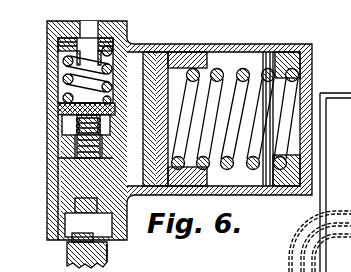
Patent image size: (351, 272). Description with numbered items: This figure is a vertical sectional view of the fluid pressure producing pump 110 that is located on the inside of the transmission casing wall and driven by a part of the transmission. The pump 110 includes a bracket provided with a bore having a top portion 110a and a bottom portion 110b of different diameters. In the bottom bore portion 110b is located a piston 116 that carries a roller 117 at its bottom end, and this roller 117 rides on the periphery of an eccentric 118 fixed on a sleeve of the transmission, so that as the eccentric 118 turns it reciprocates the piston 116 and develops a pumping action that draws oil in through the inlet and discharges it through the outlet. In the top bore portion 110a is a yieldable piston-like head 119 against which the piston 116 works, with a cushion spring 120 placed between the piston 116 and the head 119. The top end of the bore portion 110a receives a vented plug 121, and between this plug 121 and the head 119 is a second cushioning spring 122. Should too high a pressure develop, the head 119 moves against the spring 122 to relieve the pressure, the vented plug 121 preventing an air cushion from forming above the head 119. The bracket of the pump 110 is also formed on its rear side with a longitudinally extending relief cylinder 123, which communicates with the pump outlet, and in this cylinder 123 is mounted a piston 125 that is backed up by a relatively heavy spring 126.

The pump 110 is at (144, 47).
The top bore portion 110a is at (58, 63).
The bottom bore portion 110b is at (65, 228).
The piston 116 is at (80, 184).
The roller 117 is at (77, 238).
The eccentric 118 is at (110, 253).
The piston-like head 119 is at (62, 108).
The cushion spring 120 is at (77, 125).
The vented plug 121 is at (47, 30).
The second cushioning spring 122 is at (62, 80).
The relief cylinder 123 is at (249, 44).
The piston 125 is at (195, 53).
The spring 126 is at (254, 172).